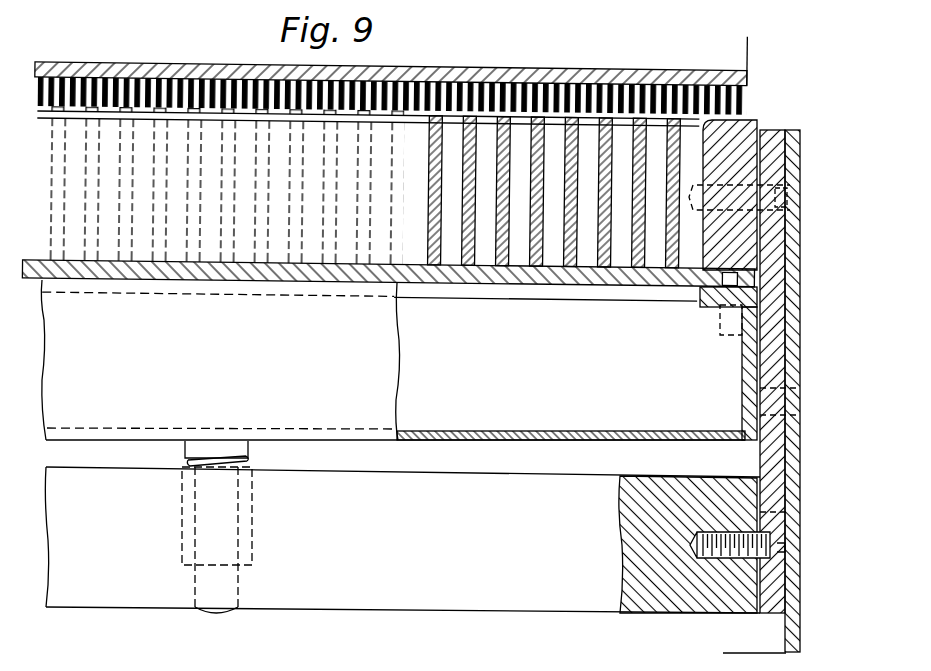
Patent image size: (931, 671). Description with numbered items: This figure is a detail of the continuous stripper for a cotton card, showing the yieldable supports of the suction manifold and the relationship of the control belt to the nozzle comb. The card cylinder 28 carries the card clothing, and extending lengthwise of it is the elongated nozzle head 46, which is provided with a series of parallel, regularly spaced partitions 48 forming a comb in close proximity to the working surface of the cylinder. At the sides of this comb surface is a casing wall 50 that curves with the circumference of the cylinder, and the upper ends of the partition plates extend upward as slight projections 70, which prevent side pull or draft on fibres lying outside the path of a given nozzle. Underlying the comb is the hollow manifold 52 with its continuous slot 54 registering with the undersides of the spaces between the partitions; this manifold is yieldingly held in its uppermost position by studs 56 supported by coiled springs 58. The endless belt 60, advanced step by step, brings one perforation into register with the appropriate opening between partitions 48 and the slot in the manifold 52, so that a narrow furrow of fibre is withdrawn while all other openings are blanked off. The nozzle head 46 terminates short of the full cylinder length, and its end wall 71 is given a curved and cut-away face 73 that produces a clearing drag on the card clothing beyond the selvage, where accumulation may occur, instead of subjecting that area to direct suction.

The card cylinder 28 is at (596, 64).
The casing wall 50 is at (752, 92).
The projections 70 is at (472, 108).
The nozzle head 46 is at (90, 216).
The partitions 48 is at (548, 236).
The continuous slot 54 is at (453, 292).
The belt 60 is at (44, 318).
The manifold 52 is at (576, 361).
The curved and cut-away face 73 is at (713, 118).
The end wall 71 is at (762, 131).
The studs 56 is at (250, 452).
The coiled springs 58 is at (250, 463).